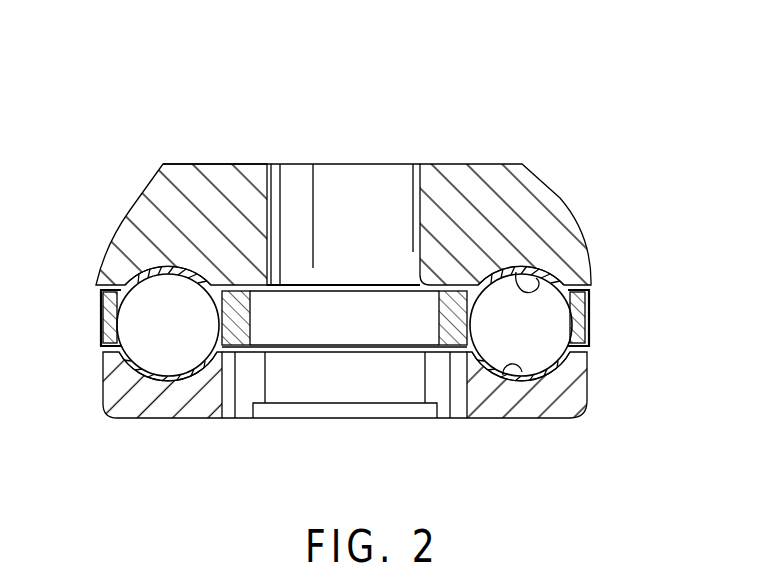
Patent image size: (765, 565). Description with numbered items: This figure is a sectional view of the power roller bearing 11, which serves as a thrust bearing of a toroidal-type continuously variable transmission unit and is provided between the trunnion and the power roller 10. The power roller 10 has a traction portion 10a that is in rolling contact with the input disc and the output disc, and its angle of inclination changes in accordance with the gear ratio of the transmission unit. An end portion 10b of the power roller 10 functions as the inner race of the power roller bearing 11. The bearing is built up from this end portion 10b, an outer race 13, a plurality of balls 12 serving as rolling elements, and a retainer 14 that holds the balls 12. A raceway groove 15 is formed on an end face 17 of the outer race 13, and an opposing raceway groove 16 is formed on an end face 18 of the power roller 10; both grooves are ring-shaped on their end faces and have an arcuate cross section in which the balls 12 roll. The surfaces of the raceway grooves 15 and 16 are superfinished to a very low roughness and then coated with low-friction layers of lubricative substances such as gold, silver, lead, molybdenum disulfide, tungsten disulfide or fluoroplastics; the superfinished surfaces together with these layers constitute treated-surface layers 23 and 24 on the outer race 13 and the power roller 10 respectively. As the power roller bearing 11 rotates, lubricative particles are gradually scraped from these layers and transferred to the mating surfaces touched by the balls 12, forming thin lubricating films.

The power roller 10 is at (497, 166).
The traction portion 10a is at (568, 209).
The end portion 10b is at (121, 268).
The power roller bearing 11 is at (434, 130).
The balls 12 is at (148, 338).
The outer race 13 is at (553, 396).
The retainer 14 is at (588, 315).
The raceway groove 15 is at (503, 375).
The raceway groove 16 is at (573, 271).
The end face 17 is at (242, 328).
The end face 18 is at (252, 312).
The treated-surface layer 23 is at (588, 396).
The treated-surface layer 24 is at (516, 272).